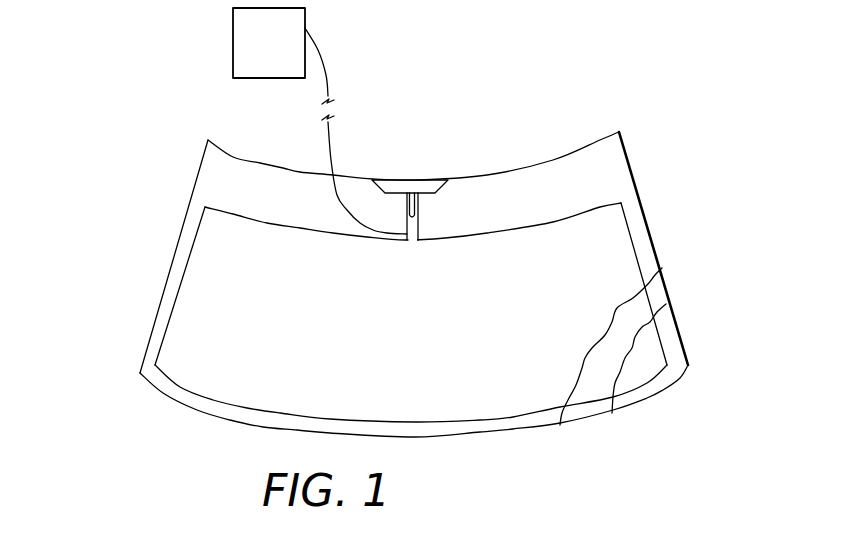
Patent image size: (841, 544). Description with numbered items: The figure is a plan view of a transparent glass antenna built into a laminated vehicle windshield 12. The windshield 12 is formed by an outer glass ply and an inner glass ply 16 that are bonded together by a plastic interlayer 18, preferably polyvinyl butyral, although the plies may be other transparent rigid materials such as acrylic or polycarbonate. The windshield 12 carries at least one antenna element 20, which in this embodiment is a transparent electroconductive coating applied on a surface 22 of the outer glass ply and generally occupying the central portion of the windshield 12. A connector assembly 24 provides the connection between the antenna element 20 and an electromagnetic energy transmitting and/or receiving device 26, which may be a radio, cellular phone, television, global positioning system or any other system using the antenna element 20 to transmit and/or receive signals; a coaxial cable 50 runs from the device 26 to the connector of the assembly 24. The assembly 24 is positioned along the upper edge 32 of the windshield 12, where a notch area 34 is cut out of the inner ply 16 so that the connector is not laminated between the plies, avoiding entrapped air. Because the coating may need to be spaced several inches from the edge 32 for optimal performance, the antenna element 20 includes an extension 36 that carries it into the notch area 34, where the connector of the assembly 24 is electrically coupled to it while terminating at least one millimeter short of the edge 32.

The laminated vehicle windshield 12 is at (153, 238).
The inner glass ply 16 is at (660, 279).
The plastic interlayer 18 is at (661, 309).
The antenna element 20 is at (500, 418).
The surface 22 is at (663, 383).
The connector assembly 24 is at (404, 180).
The electromagnetic energy transmitting and/or receiving device 26 is at (279, 58).
The upper edge 32 is at (260, 163).
The notch area 34 is at (433, 190).
The extension 36 is at (422, 222).
The coaxial cable 50 is at (329, 150).